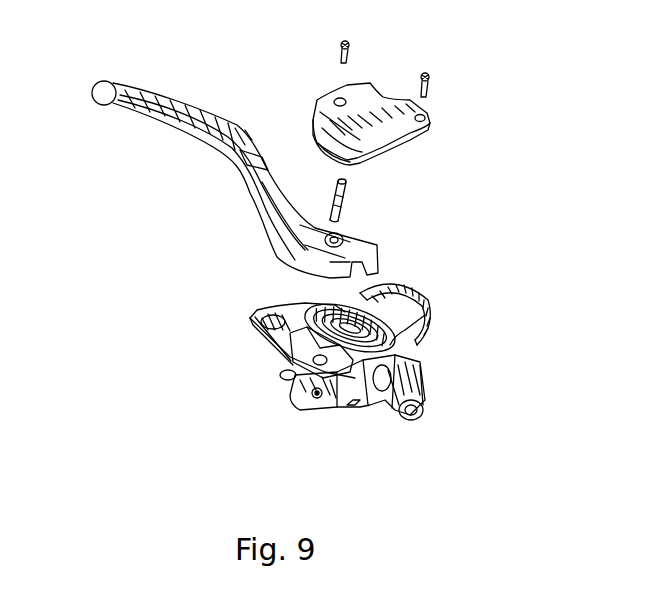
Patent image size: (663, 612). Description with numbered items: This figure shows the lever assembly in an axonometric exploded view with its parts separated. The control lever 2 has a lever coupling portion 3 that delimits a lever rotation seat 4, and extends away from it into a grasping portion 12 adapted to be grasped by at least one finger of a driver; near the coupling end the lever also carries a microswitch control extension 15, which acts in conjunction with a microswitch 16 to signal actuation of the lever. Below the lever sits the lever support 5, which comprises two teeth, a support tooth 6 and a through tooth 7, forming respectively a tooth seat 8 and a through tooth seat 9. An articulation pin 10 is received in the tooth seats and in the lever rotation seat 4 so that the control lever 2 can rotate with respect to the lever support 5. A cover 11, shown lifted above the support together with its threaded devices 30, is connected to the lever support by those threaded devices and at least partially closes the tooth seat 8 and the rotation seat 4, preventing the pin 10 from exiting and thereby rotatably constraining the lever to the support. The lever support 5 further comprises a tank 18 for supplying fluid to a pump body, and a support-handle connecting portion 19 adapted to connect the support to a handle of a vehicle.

The control lever 2 is at (240, 180).
The lever coupling portion 3 is at (287, 245).
The lever rotation seat 4 is at (347, 233).
The lever support 5 is at (385, 400).
The support tooth 6 is at (293, 398).
The through tooth 7 is at (287, 357).
The tooth seat 8 is at (320, 405).
The through tooth seat 9 is at (250, 323).
The articulation pin 10 is at (350, 195).
The cover 11 is at (385, 110).
The grasping portion 12 is at (177, 127).
The microswitch control extension 15 is at (387, 270).
The microswitch 16 is at (355, 400).
The tank 18 is at (410, 350).
The support-handle connecting portion 19 is at (420, 287).
The threaded devices 30 is at (338, 52).